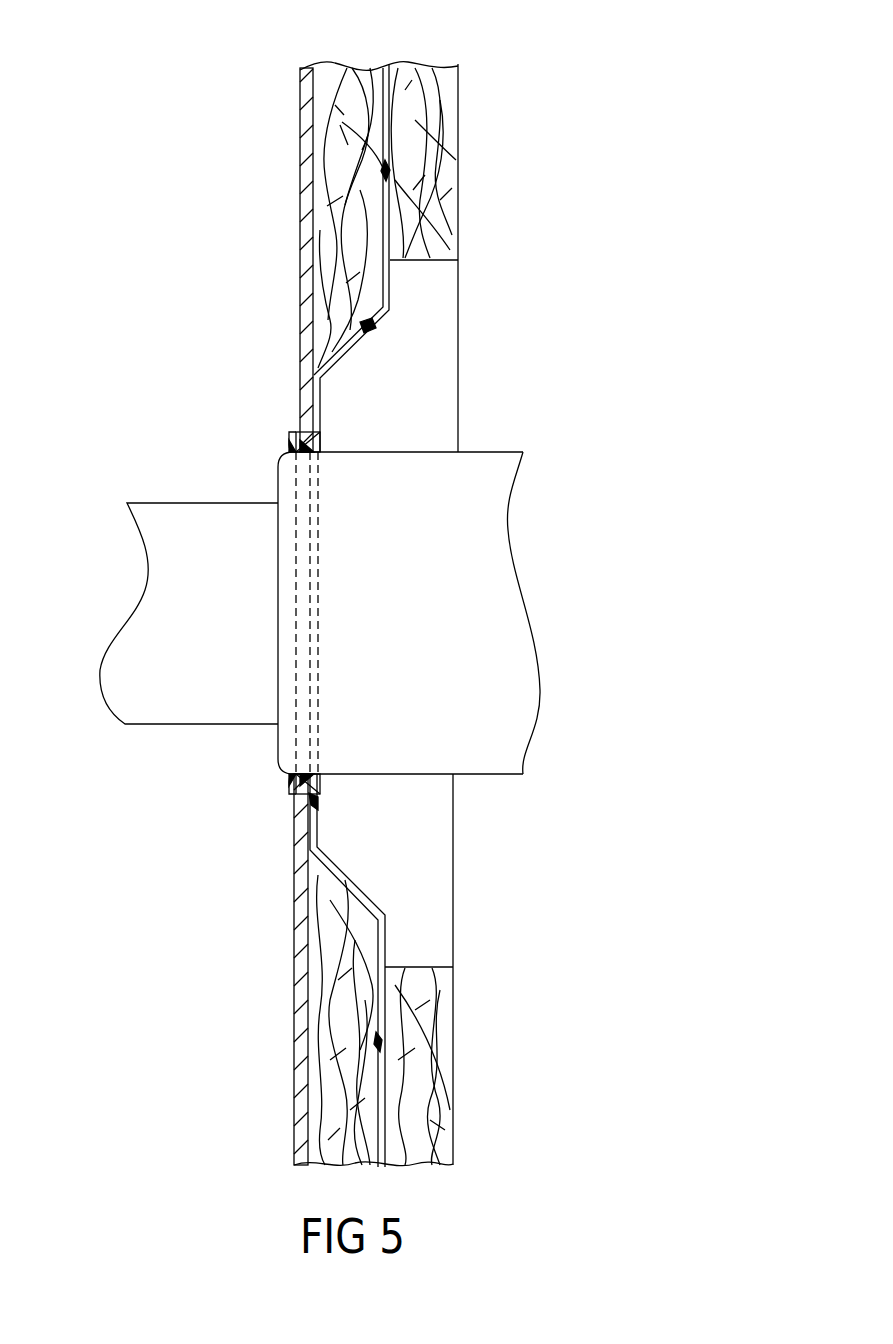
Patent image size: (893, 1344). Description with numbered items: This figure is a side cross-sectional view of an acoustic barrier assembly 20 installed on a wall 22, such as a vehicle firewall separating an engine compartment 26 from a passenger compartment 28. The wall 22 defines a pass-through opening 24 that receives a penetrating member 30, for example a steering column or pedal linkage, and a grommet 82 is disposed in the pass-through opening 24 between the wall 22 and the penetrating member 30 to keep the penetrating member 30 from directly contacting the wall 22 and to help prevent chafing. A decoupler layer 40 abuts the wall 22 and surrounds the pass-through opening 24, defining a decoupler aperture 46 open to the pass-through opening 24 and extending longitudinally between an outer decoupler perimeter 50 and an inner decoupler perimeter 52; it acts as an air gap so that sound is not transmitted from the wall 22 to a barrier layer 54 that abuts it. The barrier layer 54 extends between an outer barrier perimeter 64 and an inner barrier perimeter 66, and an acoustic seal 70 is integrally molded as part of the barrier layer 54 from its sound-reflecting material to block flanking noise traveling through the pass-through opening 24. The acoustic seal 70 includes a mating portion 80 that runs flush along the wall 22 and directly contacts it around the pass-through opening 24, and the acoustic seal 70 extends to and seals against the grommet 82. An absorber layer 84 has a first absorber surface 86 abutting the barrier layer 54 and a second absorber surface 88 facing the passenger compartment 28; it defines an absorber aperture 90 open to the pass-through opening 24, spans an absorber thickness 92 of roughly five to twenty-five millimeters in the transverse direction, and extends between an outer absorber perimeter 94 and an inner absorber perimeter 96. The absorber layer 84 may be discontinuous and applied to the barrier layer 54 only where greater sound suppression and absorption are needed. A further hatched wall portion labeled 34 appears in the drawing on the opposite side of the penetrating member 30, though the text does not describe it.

The acoustic barrier assembly 20 is at (92, 216).
The wall 22 is at (305, 297).
The pass-through opening 24 is at (321, 702).
The engine compartment 26 is at (48, 618).
The passenger compartment 28 is at (564, 616).
The penetrating member 30 is at (142, 693).
The lower wall panel 34 is at (277, 940).
The decoupler layer 40 is at (330, 232).
The decoupler aperture 46 is at (359, 388).
The outer decoupler perimeter 50 is at (312, 1170).
The inner decoupler perimeter 52 is at (303, 861).
The barrier layer 54 is at (385, 300).
The outer barrier perimeter 64 is at (389, 1180).
The inner barrier perimeter 66 is at (315, 428).
The acoustic seal 70 is at (368, 863).
The mating portion 80 is at (313, 827).
The grommet 82 is at (287, 782).
The absorber layer 84 is at (443, 131).
The first absorber surface 86 is at (373, 110).
The second absorber surface 88 is at (474, 200).
The absorber aperture 90 is at (443, 280).
The absorber thickness 92 is at (390, 13).
The outer absorber perimeter 94 is at (445, 1180).
The inner absorber perimeter 96 is at (427, 954).